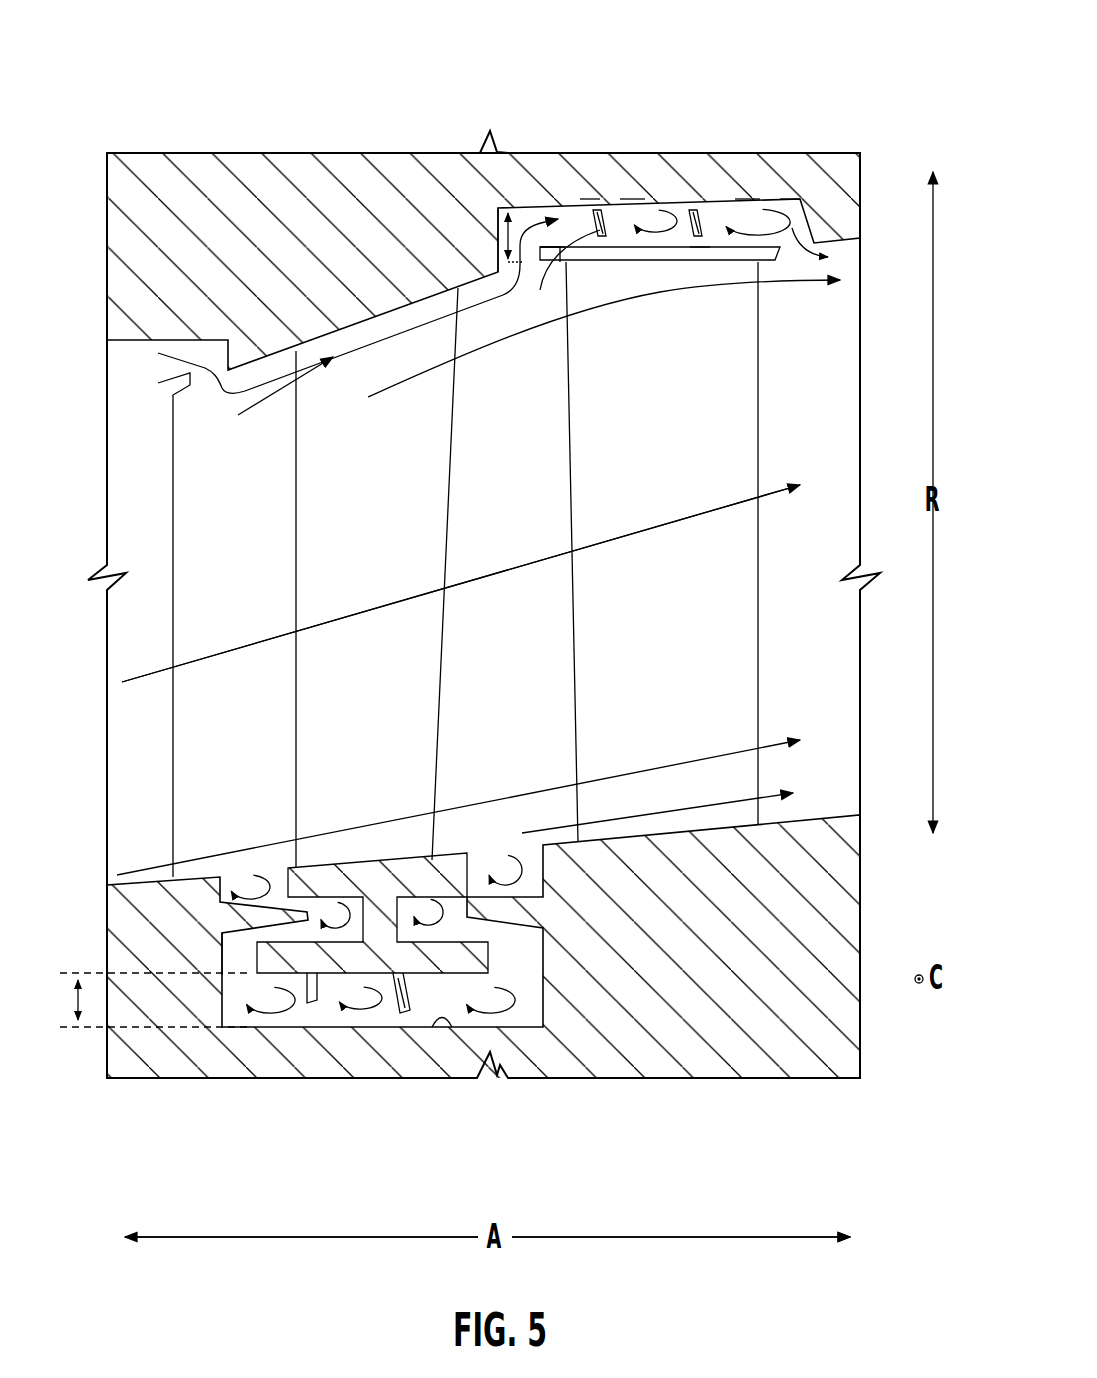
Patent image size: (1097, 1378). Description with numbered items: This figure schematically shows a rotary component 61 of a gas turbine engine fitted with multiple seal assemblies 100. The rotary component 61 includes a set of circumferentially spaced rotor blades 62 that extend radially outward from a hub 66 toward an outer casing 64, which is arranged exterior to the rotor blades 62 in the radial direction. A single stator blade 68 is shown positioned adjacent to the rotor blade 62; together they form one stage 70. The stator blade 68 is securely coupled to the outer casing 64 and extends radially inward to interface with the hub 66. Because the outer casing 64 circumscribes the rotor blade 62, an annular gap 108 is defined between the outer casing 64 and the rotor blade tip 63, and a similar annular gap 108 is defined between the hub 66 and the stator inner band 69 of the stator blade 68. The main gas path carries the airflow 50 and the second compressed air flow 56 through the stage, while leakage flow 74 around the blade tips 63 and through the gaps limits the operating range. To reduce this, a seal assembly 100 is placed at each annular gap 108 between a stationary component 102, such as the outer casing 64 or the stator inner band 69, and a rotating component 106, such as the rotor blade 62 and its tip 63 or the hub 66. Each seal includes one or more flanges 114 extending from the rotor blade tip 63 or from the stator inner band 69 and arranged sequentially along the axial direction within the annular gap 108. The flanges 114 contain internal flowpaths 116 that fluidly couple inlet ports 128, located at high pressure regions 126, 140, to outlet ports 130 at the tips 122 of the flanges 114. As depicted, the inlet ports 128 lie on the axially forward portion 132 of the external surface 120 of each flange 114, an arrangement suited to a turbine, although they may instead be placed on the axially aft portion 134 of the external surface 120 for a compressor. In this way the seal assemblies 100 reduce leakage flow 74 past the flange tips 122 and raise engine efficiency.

The seal assembly 100 is at (877, 87).
The rotary component 61 is at (288, 128).
The stage 70 is at (503, 120).
The annular gap 108 is at (447, 153).
The high pressure region 126 is at (548, 202).
The stationary component 102 is at (593, 198).
The outlet port 130 is at (605, 212).
The internal flowpath 116 is at (628, 210).
The high pressure region 140 is at (660, 207).
The tip 122 is at (695, 207).
The external surface 120 is at (745, 200).
The outer casing 64 is at (790, 197).
The inlet port 128 is at (565, 250).
The flange 114 is at (612, 242).
The rotor blade tip 63 is at (640, 262).
The axially aft portion 134 is at (752, 248).
The axially forward portion 132 is at (696, 258).
The rotating component 106 is at (282, 1103).
The leakage flow 74 is at (222, 393).
The stator blade 68 is at (323, 650).
The rotor blade 62 is at (662, 552).
The initial airflow 50 is at (245, 645).
The second compressed air flow 56 is at (461, 583).
The hub 66 is at (785, 910).
The stator inner band 69 is at (280, 965).